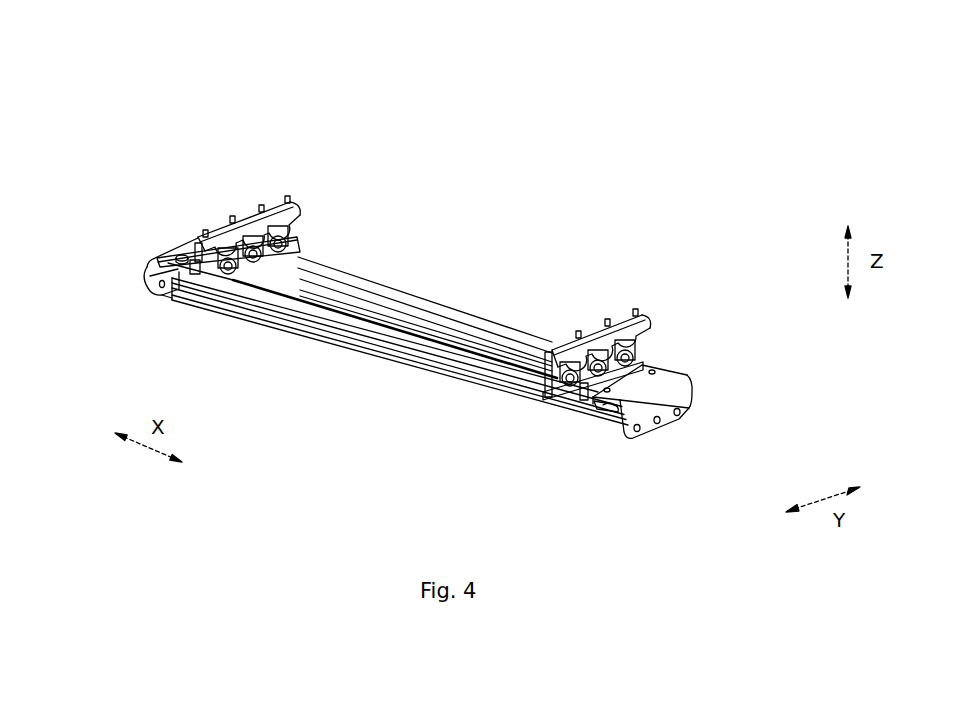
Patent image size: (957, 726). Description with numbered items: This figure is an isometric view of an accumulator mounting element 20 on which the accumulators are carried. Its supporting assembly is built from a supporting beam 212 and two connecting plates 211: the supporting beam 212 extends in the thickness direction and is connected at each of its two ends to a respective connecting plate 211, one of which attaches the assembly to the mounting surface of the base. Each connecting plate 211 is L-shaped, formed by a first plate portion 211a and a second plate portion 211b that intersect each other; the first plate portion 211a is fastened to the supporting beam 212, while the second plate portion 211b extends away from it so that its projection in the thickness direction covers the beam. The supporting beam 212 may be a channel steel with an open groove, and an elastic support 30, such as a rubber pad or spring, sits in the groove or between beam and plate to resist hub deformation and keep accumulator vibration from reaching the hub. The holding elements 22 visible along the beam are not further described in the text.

The accumulator mounting element 20 is at (519, 32).
The clamp 22 is at (314, 174).
The supporting beam 212 is at (398, 260).
The connecting plate 211 is at (439, 307).
The first plate portion 211a is at (668, 372).
The second plate portion 211b is at (682, 402).
The elastic support 30 is at (601, 412).